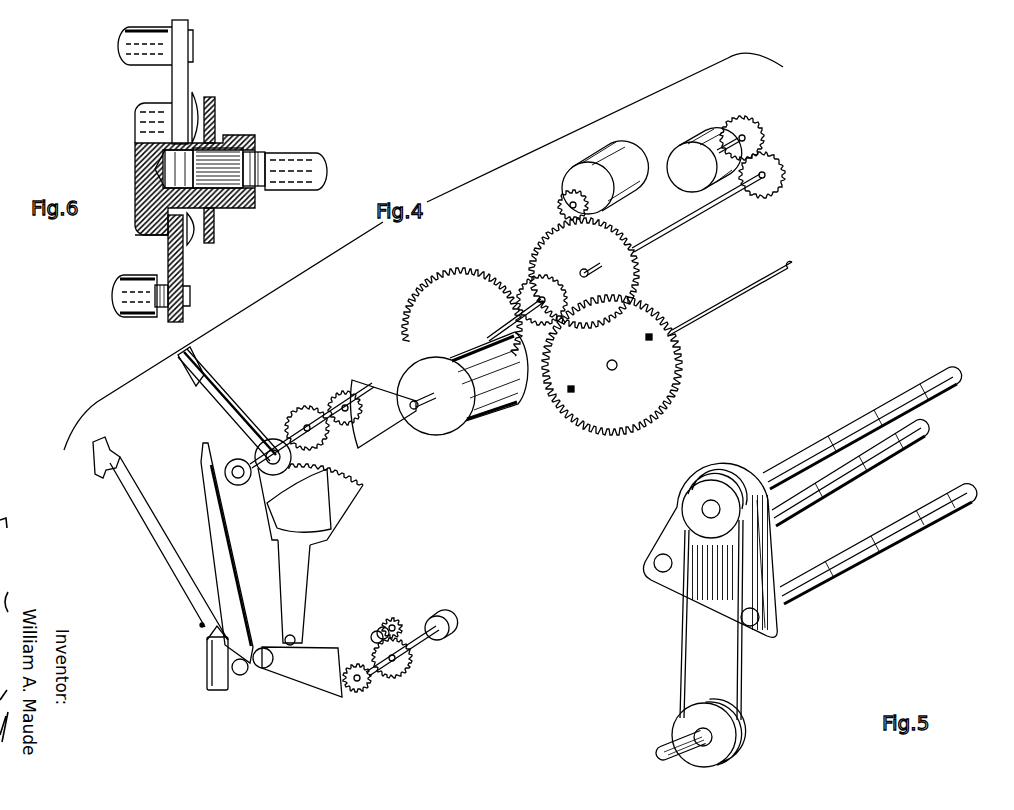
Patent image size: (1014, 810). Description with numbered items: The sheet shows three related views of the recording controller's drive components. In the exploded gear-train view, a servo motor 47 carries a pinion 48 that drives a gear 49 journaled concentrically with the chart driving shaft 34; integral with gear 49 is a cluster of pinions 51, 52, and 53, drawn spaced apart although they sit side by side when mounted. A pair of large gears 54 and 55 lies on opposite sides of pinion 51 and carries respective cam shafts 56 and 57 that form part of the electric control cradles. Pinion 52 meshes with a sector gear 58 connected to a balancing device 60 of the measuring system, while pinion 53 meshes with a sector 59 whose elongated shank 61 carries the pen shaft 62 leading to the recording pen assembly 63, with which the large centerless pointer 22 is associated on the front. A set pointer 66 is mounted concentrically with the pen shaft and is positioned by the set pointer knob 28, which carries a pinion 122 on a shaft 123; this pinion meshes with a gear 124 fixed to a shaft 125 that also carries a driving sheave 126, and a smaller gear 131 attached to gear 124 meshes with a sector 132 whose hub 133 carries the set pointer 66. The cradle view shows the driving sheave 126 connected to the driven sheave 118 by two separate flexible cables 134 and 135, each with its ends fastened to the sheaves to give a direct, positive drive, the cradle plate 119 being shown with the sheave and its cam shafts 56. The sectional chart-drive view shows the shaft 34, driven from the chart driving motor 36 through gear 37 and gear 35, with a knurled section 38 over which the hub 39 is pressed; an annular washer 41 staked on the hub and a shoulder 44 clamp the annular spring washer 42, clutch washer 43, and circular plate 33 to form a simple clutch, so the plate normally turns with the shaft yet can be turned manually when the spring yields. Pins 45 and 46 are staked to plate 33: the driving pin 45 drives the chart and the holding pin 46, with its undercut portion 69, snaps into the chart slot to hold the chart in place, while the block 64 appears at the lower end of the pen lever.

In FIG. 4, the centerless pointer 22 is at (206, 393).
In FIG. 4, the set pointer knob 28 is at (390, 622).
In FIG. 6, the circular plate 33 is at (190, 86).
In FIG. 4, the circular plate 33 is at (238, 486).
In FIG. 6, the chart driving shaft 34 is at (307, 153).
In FIG. 4, the chart driving shaft 34 is at (712, 212).
In FIG. 4, the gear 35 is at (783, 172).
In FIG. 4, the chart driving motor 36 is at (686, 142).
In FIG. 4, the gear 37 is at (762, 128).
In FIG. 6, the knurled section 38 is at (232, 184).
In FIG. 6, the hub 39 is at (165, 238).
In FIG. 6, the annular washer 41 is at (212, 232).
In FIG. 6, the annular spring washer 42 is at (197, 236).
In FIG. 6, the clutch washer 43 is at (184, 262).
In FIG. 6, the shoulder 44 is at (162, 238).
In FIG. 6, the driving pin 45 is at (118, 42).
In FIG. 6, the holding pin 46 is at (133, 318).
In FIG. 4, the servo motor 47 is at (615, 171).
In FIG. 4, the pinion 48 is at (558, 201).
In FIG. 4, the gear 49 is at (641, 270).
In FIG. 4, the pinion 51 is at (522, 286).
In FIG. 4, the pinion 52 is at (338, 396).
In FIG. 4, the pinion 53 is at (296, 418).
In FIG. 4, the large gear 54 is at (410, 306).
In FIG. 4, the large gear 55 is at (587, 406).
In FIG. 5, the cam shaft 56 is at (937, 395).
In FIG. 4, the cam shaft 57 is at (725, 313).
In FIG. 4, the sector gear 58 is at (381, 431).
In FIG. 4, the sector 59 is at (340, 499).
In FIG. 4, the balancing device 60 is at (471, 423).
In FIG. 4, the elongated shank 61 is at (301, 554).
In FIG. 4, the pen shaft 62 is at (240, 681).
In FIG. 4, the recording pen assembly 63 is at (199, 625).
In FIG. 4, the block 64 is at (214, 671).
In FIG. 4, the set pointer 66 is at (205, 496).
In FIG. 6, the undercut portion 69 is at (167, 322).
In FIG. 5, the driven sheave 118 is at (692, 493).
In FIG. 5, the bracket plate 119 is at (760, 579).
In FIG. 4, the pinion 122 is at (398, 619).
In FIG. 4, the shaft 123 is at (371, 634).
In FIG. 4, the gear 124 is at (399, 673).
In FIG. 4, the shaft 125 is at (421, 646).
In FIG. 5, the shaft 125 is at (682, 742).
In FIG. 4, the driving sheave 126 is at (452, 629).
In FIG. 5, the driving sheave 126 is at (748, 723).
In FIG. 4, the smaller gear 131 is at (356, 691).
In FIG. 4, the sector 132 is at (330, 691).
In FIG. 4, the hub 133 is at (266, 681).
In FIG. 5, the flexible cable 134 is at (743, 649).
In FIG. 5, the flexible cable 135 is at (682, 624).